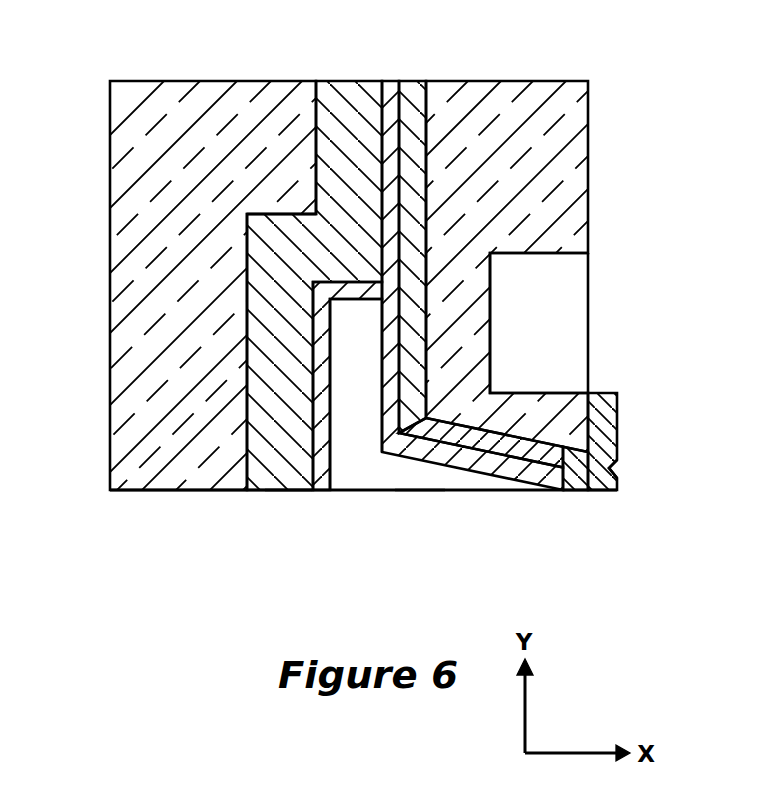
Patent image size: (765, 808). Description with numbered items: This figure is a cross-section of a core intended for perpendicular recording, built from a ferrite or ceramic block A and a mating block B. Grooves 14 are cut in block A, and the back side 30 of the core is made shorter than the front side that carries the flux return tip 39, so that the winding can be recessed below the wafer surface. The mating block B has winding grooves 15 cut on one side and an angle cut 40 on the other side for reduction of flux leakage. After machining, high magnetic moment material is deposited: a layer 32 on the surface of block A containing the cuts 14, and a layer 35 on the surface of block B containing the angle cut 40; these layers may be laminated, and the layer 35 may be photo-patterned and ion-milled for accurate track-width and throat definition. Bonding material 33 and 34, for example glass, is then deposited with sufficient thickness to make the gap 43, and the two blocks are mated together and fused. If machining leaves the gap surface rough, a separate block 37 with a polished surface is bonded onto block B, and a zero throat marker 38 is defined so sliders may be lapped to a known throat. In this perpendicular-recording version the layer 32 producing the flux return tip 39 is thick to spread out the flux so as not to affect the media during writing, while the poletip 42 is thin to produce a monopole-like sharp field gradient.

The ferrite or ceramic block A is at (123, 121).
The mating block B is at (570, 143).
The grooves 14 is at (372, 394).
The winding grooves 15 is at (581, 287).
The back side 30 is at (277, 200).
The high magnetic moment material layer 32 is at (332, 81).
The bonding material 33 is at (323, 490).
The bonding material 34 is at (393, 81).
The high magnetic moment material layer 35 is at (407, 201).
The separate block 37 is at (608, 414).
The zero throat marker 38 is at (618, 468).
The flux return tip 39 is at (289, 518).
The angle cut 40 is at (447, 433).
The poletip 42 is at (566, 517).
The gap 43 is at (422, 526).